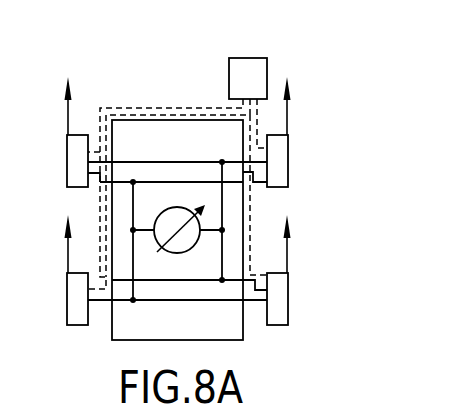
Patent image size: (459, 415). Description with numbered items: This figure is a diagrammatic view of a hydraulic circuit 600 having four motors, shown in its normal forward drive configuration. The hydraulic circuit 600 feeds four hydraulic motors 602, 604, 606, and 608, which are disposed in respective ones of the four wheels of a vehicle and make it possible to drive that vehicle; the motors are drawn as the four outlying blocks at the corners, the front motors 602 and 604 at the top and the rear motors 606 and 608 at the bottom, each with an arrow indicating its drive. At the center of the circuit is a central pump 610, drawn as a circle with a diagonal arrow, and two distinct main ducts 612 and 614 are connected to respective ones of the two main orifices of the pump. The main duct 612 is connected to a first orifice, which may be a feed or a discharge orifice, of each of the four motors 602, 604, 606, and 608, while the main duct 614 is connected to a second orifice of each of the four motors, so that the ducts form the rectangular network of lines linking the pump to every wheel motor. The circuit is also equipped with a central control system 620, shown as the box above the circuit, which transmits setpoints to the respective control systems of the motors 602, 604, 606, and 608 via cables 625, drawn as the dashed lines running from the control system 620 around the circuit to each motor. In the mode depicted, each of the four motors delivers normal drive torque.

The hydraulic circuit 600 is at (135, 88).
The hydraulic motor 602 is at (79, 161).
The hydraulic motor 604 is at (278, 161).
The hydraulic motor 606 is at (79, 298).
The hydraulic motor 608 is at (278, 299).
The central pump 610 is at (180, 212).
The main duct 612 is at (160, 301).
The main duct 614 is at (182, 281).
The central control system 620 is at (250, 57).
The cables 625 is at (222, 105).